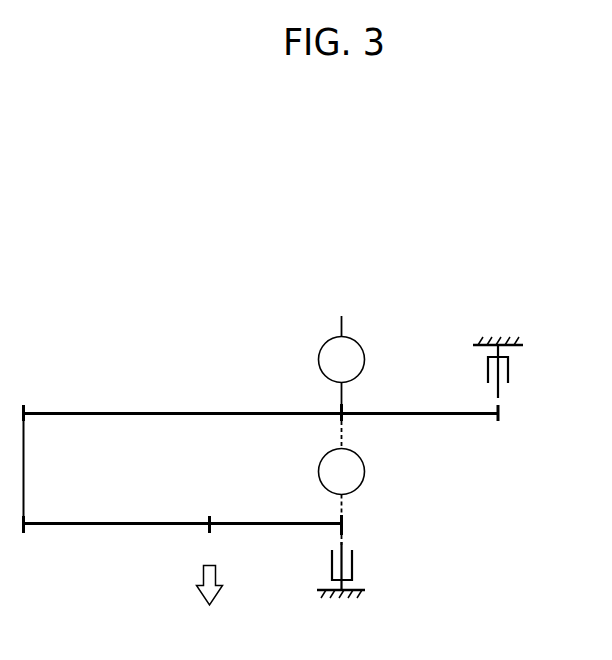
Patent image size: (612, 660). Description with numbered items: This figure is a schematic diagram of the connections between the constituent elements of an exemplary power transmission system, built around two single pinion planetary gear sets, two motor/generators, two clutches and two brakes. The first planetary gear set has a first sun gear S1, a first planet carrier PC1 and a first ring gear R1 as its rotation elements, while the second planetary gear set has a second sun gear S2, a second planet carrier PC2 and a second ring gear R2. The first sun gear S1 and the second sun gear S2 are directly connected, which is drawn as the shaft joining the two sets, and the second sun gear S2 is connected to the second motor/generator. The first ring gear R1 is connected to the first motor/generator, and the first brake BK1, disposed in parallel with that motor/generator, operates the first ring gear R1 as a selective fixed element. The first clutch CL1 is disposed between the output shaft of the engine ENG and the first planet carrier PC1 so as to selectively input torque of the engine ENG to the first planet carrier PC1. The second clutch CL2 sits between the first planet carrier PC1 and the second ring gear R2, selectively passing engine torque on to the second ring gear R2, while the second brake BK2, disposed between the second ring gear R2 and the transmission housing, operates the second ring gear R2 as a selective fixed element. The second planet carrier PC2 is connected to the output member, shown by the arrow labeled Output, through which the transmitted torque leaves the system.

The first sun gear S1 is at (260, 452).
The second sun gear S2 is at (182, 551).
The first planet carrier PC1 is at (365, 426).
The second planet carrier PC2 is at (233, 536).
The first ring gear R1 is at (529, 444).
The second ring gear R2 is at (361, 535).
The first clutch CL1 is at (342, 375).
The second clutch CL2 is at (342, 482).
The first brake BK1 is at (515, 367).
The second brake BK2 is at (361, 570).
The engine ENG is at (341, 312).
The output Output is at (209, 603).